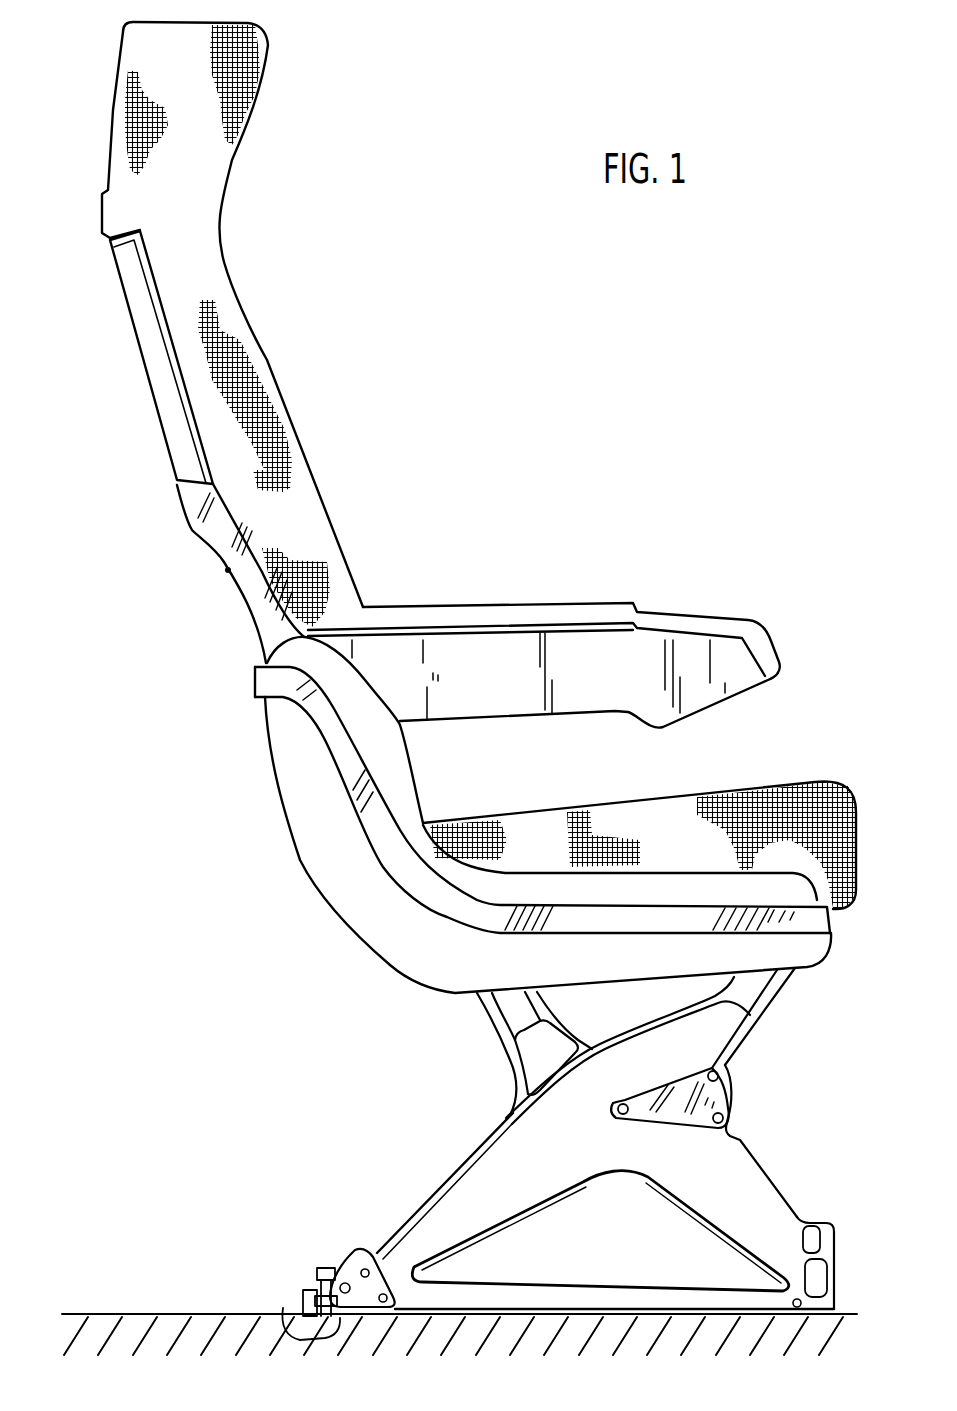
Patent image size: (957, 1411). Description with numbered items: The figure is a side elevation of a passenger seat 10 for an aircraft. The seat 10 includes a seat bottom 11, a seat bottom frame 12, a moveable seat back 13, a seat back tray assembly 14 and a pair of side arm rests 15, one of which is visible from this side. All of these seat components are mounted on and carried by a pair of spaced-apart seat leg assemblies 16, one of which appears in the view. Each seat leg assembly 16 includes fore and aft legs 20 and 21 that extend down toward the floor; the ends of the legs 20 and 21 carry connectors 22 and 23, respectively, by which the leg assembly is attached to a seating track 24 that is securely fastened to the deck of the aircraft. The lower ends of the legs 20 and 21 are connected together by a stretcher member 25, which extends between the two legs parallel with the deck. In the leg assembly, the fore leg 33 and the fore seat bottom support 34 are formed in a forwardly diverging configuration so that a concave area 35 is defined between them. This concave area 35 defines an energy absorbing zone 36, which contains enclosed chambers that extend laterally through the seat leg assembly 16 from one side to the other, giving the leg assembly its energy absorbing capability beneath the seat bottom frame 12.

The passenger seat 10 is at (264, 237).
The seat bottom 11 is at (863, 799).
The seat bottom frame 12 is at (315, 848).
The moveable seat back 13 is at (190, 507).
The seat back tray assembly 14 is at (160, 381).
The side arm rests 15 is at (713, 630).
The seat leg assemblies 16 is at (488, 1106).
The fore leg 20 is at (760, 1157).
The aft leg 21 is at (452, 1188).
The connector 22 is at (367, 1300).
The connector 23 is at (820, 1306).
The seating track 24 is at (287, 1316).
The stretcher member 25 is at (602, 1288).
The fore leg 33 is at (787, 1200).
The fore seat bottom support 34 is at (757, 1029).
The concave area 35 is at (767, 1105).
The energy absorbing zone 36 is at (727, 1097).